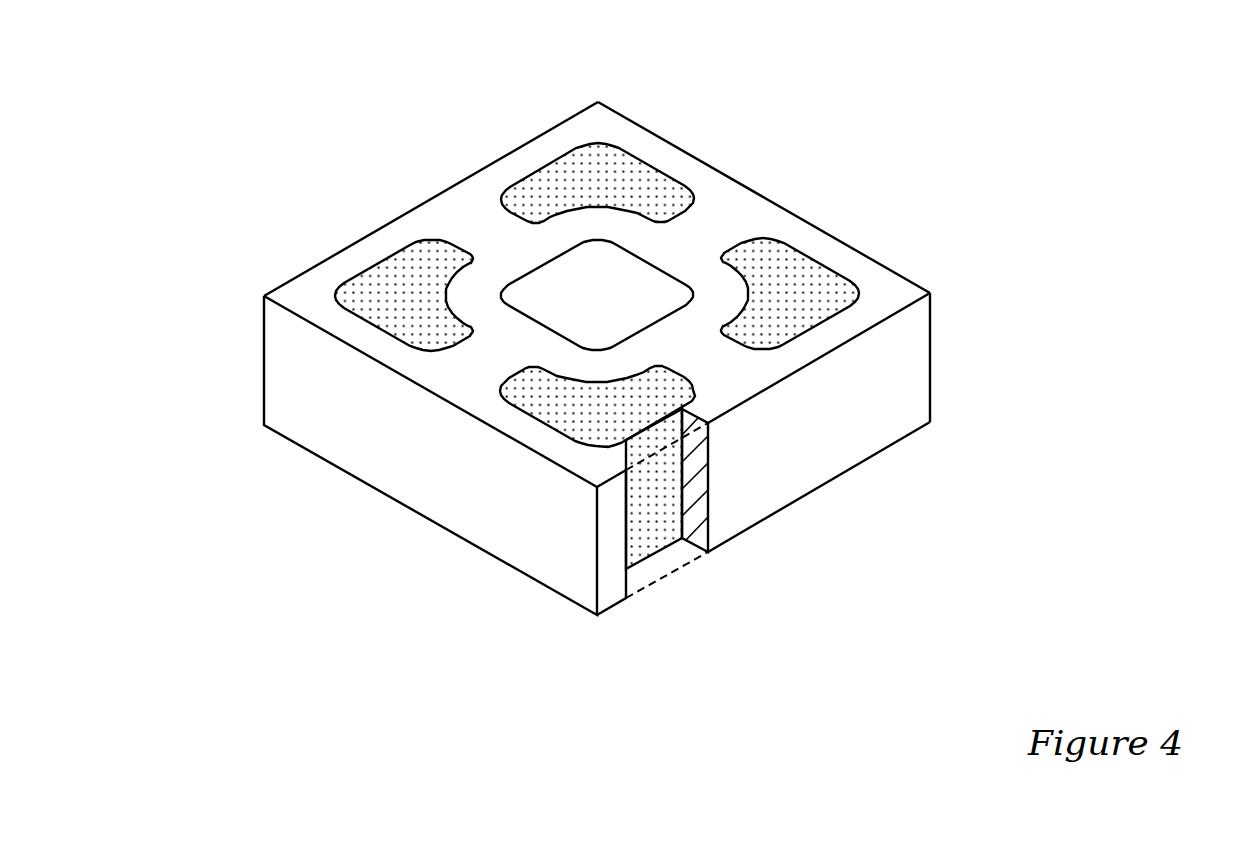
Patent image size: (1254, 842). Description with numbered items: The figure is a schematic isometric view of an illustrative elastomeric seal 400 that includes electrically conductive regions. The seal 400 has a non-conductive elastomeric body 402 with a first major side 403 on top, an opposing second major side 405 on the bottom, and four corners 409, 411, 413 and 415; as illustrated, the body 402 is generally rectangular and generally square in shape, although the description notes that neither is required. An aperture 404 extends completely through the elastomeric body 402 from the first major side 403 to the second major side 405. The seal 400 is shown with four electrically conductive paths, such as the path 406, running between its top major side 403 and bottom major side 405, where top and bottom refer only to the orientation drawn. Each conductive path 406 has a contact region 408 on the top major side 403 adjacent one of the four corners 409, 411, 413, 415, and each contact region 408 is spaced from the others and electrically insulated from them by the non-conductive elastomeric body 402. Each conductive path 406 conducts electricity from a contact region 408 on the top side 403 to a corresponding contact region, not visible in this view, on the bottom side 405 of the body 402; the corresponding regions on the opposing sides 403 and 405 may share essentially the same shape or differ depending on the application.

The elastomeric seal 400 is at (587, 334).
The non-conductive elastomeric body 402 is at (446, 208).
The first major side 403 is at (888, 293).
The aperture 404 is at (640, 270).
The second major side 405 is at (803, 497).
The conductive path 406 is at (653, 532).
The contact region 408 is at (383, 270).
The corner 409 is at (923, 375).
The corner 411 is at (597, 550).
The corner 413 is at (265, 358).
The corner 415 is at (598, 102).